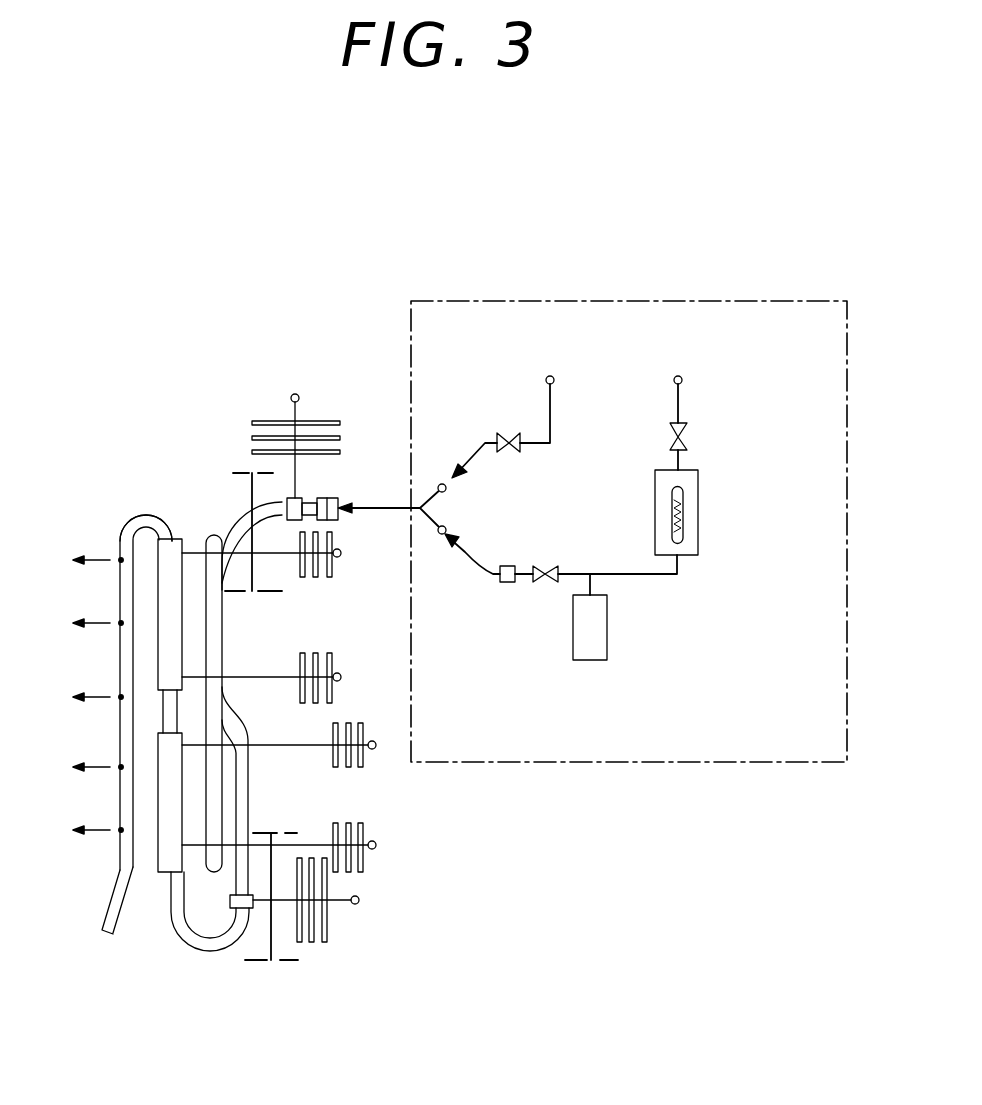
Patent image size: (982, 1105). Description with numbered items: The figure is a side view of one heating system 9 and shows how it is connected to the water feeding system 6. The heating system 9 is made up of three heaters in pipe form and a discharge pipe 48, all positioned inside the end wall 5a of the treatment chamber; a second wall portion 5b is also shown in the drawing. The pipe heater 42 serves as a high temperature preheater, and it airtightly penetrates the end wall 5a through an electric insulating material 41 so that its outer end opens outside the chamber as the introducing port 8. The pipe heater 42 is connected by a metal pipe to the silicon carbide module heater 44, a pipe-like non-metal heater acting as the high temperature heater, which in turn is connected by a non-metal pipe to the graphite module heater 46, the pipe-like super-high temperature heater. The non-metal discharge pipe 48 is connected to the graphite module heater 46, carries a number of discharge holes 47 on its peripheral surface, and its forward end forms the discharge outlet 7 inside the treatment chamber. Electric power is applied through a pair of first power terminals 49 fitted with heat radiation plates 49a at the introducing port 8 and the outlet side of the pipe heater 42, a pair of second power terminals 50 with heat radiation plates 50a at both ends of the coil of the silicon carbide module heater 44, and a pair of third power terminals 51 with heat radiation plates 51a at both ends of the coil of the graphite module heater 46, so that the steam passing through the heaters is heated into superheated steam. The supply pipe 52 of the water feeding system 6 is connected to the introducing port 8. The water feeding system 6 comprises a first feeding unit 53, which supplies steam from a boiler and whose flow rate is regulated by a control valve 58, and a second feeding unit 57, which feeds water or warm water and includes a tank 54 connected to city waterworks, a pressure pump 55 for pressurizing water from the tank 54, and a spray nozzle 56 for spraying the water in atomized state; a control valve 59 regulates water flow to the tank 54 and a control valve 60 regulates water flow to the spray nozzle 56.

The end wall 5a is at (235, 503).
The valve 5b is at (277, 930).
The water feeding system 6 is at (637, 298).
The discharge outlet 7 is at (105, 932).
The introducing port 8 is at (337, 500).
The heating system 9 is at (144, 462).
The electric insulating material 41 is at (240, 513).
The pipe heater 42 is at (222, 621).
The silicon carbide module heater 44 is at (183, 870).
The graphite module heater 46 is at (162, 550).
The discharge holes 47 is at (118, 558).
The discharge pipe 48 is at (132, 855).
The first power terminals 49 is at (292, 394).
The heat radiation plates 49a is at (318, 421).
The second power terminals 50 is at (375, 742).
The heat radiation plates 50a is at (363, 767).
The third power terminals 51 is at (341, 552).
The heat radiation plates 51a is at (335, 668).
The supply pipe 52 is at (390, 507).
The first feeding unit 53 is at (575, 410).
The tank 54 is at (698, 530).
The pressure pump 55 is at (577, 635).
The spray nozzle 56 is at (508, 566).
The second feeding unit 57 is at (714, 396).
The control valve 58 is at (515, 438).
The control valve 59 is at (688, 440).
The control valve 60 is at (560, 568).